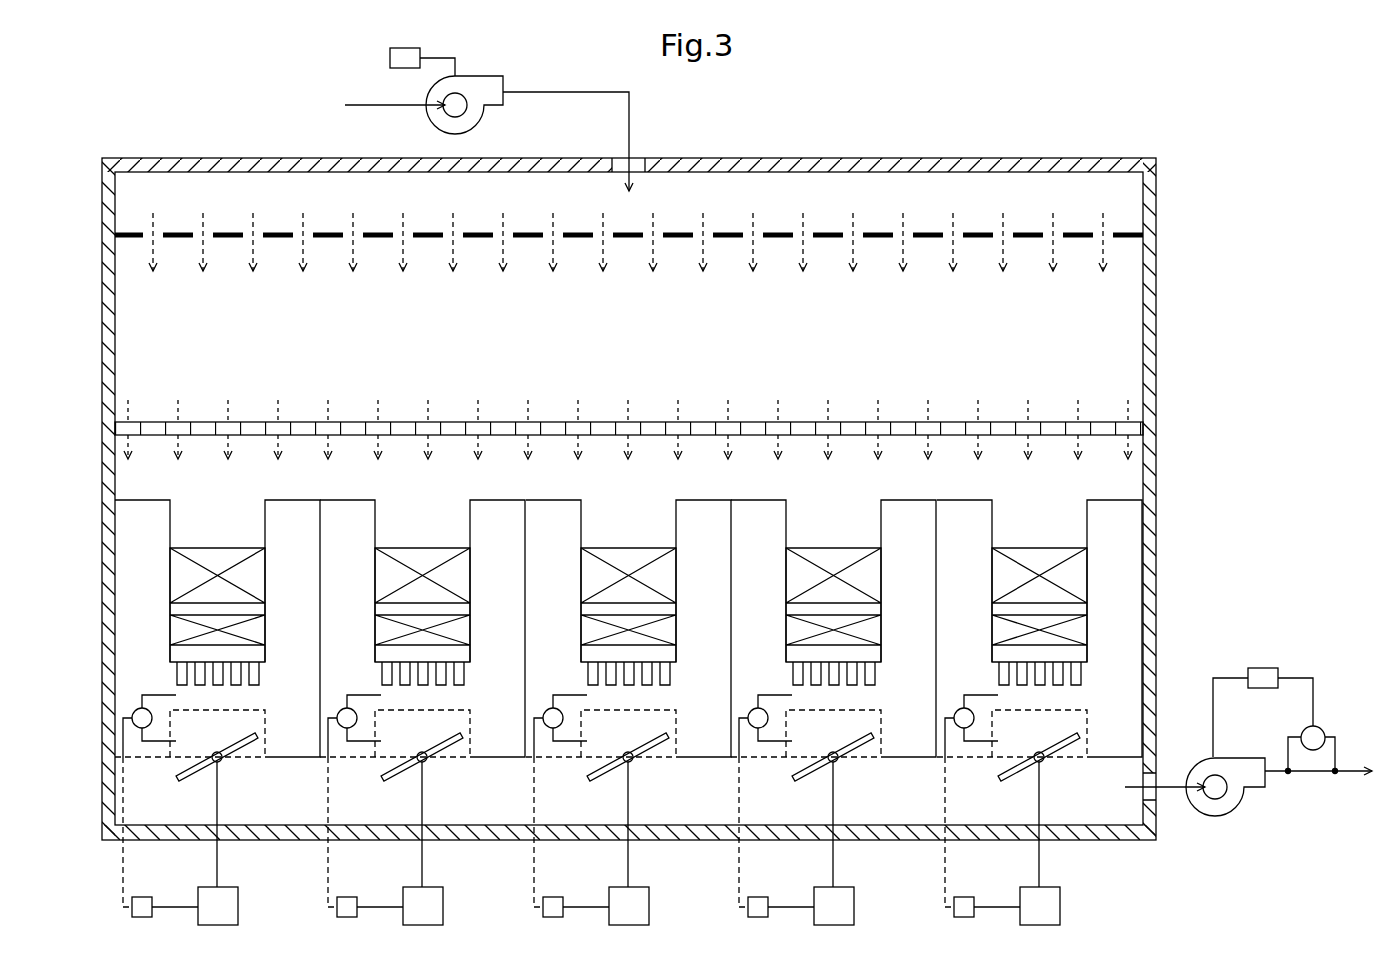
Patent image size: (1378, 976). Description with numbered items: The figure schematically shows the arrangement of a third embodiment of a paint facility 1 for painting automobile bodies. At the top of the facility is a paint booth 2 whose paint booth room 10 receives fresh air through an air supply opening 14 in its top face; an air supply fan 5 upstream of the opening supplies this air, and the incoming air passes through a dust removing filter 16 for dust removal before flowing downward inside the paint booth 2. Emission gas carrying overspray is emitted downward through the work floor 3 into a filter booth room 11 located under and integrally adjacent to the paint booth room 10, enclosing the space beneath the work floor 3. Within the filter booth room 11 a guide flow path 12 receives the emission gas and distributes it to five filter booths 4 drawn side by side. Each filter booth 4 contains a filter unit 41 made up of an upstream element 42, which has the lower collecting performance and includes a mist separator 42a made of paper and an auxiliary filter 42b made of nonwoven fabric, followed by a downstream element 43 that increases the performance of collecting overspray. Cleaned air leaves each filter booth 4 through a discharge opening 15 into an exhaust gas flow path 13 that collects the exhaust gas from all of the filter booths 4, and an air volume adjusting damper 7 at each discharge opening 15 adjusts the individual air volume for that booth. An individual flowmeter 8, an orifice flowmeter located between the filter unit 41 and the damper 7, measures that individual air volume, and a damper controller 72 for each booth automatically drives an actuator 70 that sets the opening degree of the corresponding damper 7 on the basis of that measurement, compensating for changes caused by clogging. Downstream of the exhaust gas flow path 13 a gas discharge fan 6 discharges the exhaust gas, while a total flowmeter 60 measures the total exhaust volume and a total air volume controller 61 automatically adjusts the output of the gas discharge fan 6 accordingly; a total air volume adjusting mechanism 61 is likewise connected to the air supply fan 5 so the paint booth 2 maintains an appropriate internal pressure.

The paint facility 1 is at (160, 100).
The paint booth 2 is at (636, 316).
The work floor 3 is at (908, 416).
The filter booth 4 is at (628, 628).
The air supply fan 5 is at (492, 110).
The gas discharge fan 6 is at (1222, 808).
The air volume adjusting damper 7 is at (644, 769).
The individual flowmeter 8 is at (560, 777).
The paint booth room 10 is at (103, 332).
The filter booth room 11 is at (103, 573).
The guide flow path 12 is at (720, 491).
The exhaust gas flow path 13 is at (463, 819).
The air supply opening 14 is at (646, 150).
The discharge opening 15 is at (607, 768).
The dust removing filter 16 is at (1030, 225).
The filter unit 41 is at (608, 490).
The upstream element 42 is at (630, 601).
The mist separator 42a is at (602, 559).
The auxiliary filter 42b is at (655, 592).
The downstream element 43 is at (658, 700).
The total flowmeter 60 is at (1324, 731).
The total air volume controller 61 is at (390, 58).
The actuator 70 is at (597, 843).
The damper controller 72 is at (544, 914).